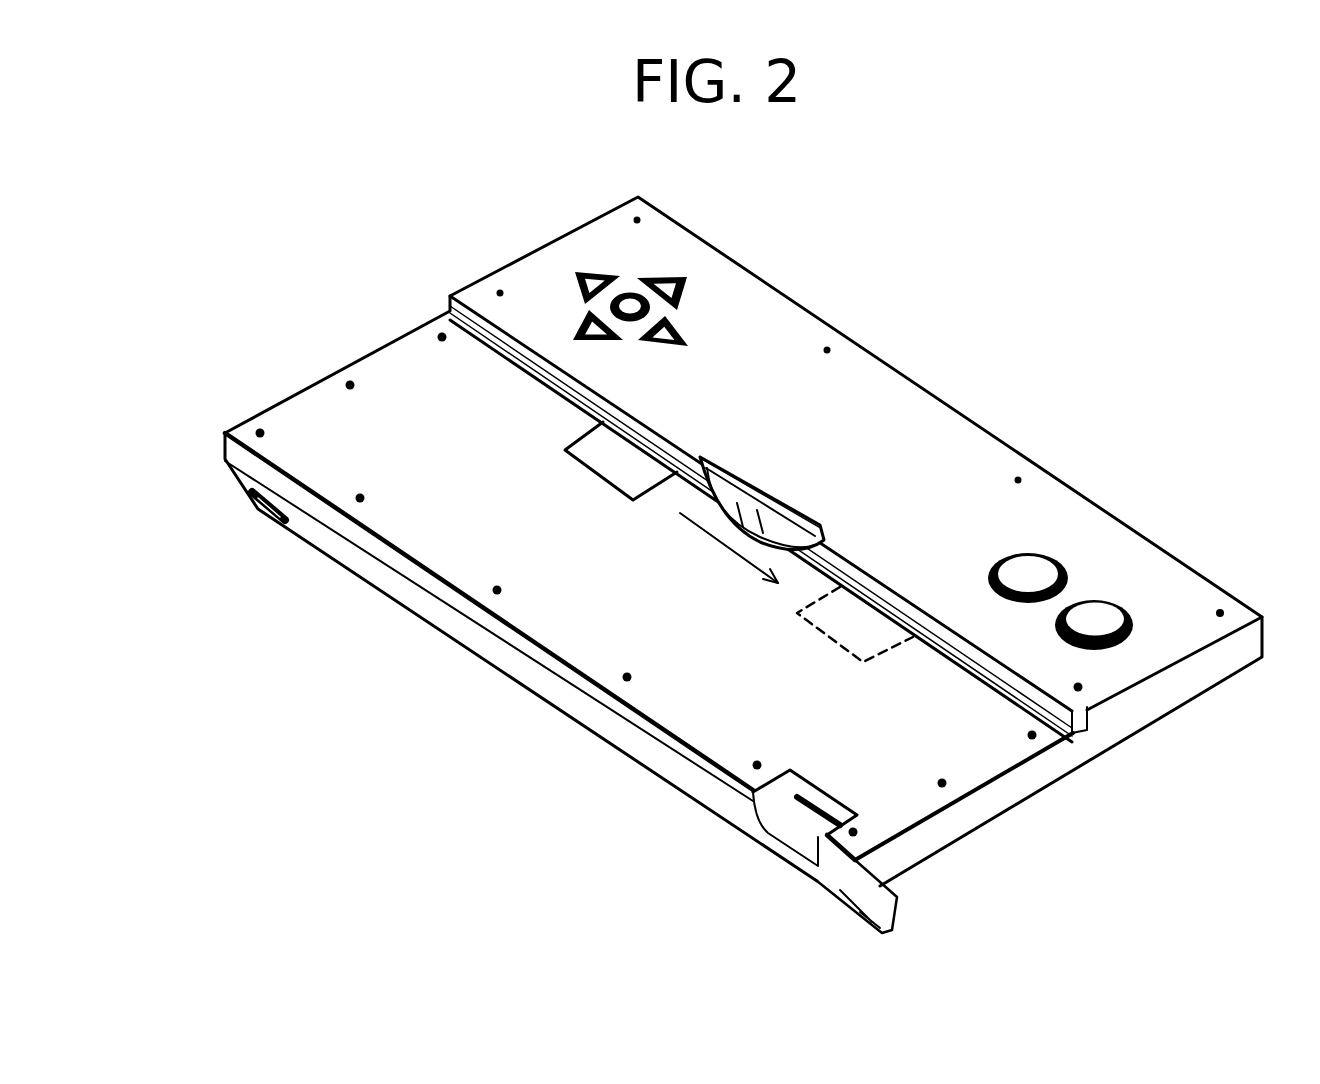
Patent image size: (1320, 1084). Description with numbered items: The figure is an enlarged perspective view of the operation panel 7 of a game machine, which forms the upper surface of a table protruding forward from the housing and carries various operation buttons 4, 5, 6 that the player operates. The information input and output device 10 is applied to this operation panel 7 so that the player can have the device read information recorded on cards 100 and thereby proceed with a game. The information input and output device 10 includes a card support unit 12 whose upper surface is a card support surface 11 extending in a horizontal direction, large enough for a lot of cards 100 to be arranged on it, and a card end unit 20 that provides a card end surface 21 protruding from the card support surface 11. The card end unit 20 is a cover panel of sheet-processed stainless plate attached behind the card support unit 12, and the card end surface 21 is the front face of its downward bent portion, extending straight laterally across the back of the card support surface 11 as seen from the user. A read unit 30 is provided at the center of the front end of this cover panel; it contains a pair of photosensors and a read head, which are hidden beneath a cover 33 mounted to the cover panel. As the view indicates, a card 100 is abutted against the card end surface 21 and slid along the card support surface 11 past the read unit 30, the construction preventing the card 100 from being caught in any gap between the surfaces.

The information input and output device 10 is at (258, 358).
The operation panel 7 is at (340, 285).
The card support surface 11 is at (435, 545).
The card support unit 12 is at (547, 633).
The card end unit 20 is at (772, 335).
The card end surface 21 is at (447, 297).
The operation button 4 is at (597, 272).
The operation button 5 is at (631, 293).
The operation button 6 is at (1093, 620).
The read unit 30 is at (748, 452).
The cover 33 is at (793, 513).
The card 100 is at (598, 462).